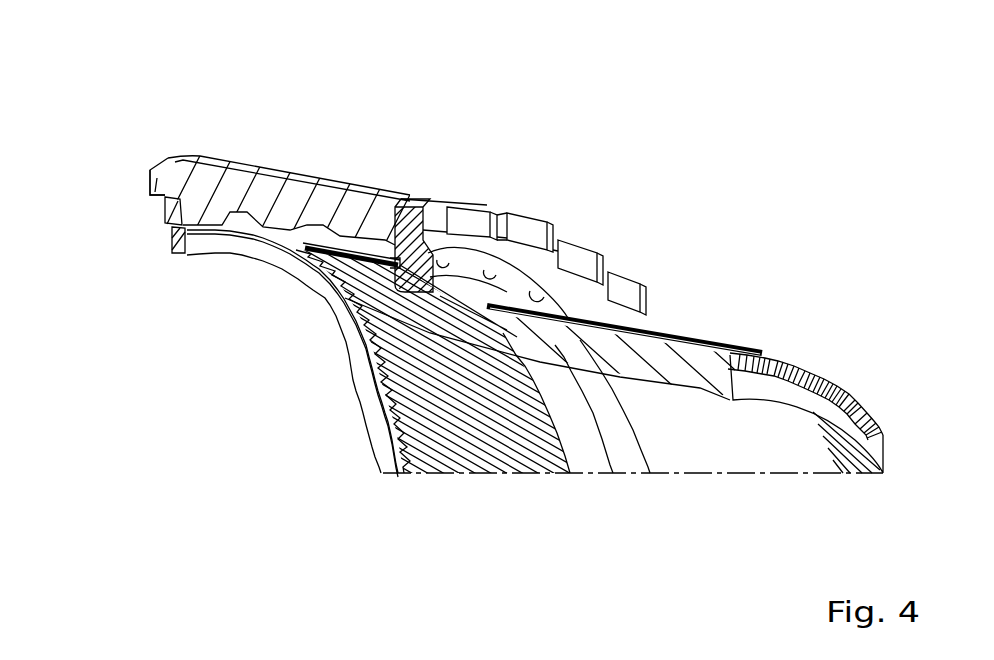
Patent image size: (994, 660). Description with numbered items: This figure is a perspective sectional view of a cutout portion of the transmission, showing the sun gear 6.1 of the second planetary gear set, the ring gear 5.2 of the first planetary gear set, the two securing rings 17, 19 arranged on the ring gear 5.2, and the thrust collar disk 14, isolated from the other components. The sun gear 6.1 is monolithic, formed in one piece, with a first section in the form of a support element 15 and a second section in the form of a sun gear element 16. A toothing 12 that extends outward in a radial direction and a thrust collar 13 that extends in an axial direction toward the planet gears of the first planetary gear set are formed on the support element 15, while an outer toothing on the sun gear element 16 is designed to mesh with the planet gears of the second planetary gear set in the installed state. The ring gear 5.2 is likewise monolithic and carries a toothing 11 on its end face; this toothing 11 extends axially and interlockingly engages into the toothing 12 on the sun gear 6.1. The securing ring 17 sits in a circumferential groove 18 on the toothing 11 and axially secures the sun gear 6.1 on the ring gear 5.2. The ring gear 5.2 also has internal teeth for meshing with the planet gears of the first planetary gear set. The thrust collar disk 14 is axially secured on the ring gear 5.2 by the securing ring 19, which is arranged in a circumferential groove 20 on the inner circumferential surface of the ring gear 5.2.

The ring gear of the first planetary gear set 5.2 is at (221, 193).
The circumferential groove 20 is at (162, 186).
The securing ring 19 is at (172, 222).
The thrust collar disk 14 is at (176, 246).
The thrust collar 13 is at (362, 287).
The support element 15 is at (401, 326).
The toothing 12 is at (408, 222).
The toothing 11 is at (460, 220).
The circumferential groove 18 is at (509, 216).
The securing ring 17 is at (535, 268).
The sun gear element 16 is at (668, 303).
The sun gear of the second planetary gear set 6.1 is at (705, 345).